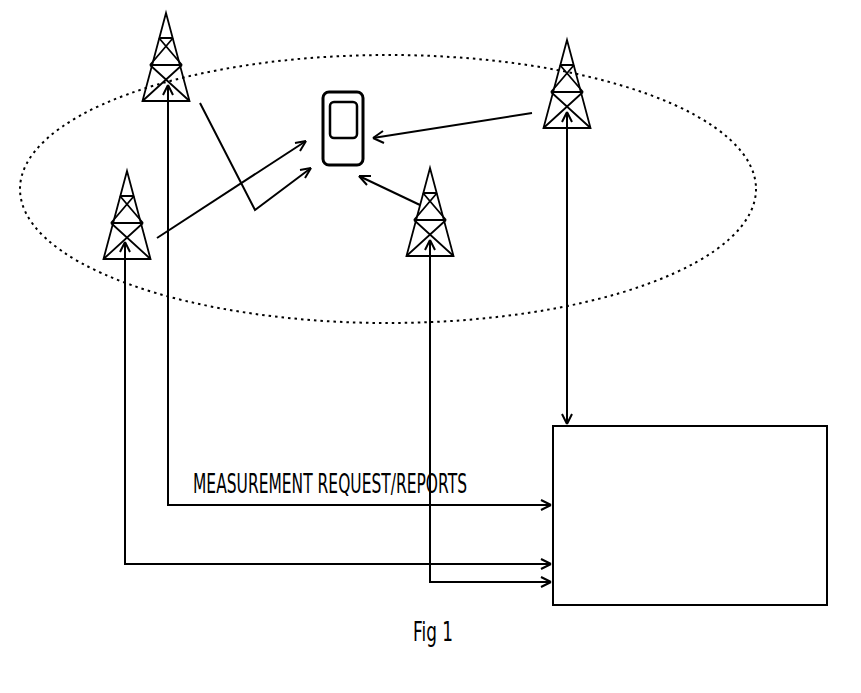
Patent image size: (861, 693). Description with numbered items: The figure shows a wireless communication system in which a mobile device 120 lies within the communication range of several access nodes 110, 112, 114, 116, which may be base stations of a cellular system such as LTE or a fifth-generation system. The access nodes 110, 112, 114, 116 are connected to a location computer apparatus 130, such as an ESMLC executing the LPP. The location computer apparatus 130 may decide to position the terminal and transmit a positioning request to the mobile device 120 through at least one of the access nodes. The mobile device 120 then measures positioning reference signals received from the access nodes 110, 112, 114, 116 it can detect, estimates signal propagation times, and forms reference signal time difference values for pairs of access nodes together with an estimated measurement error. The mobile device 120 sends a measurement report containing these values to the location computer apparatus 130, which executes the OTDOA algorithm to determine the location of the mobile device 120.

The access node 110 is at (179, 47).
The access node 112 is at (135, 203).
The access node 114 is at (440, 200).
The access node 116 is at (578, 70).
The mobile device 120 is at (363, 110).
The location computer apparatus 130 is at (690, 515).